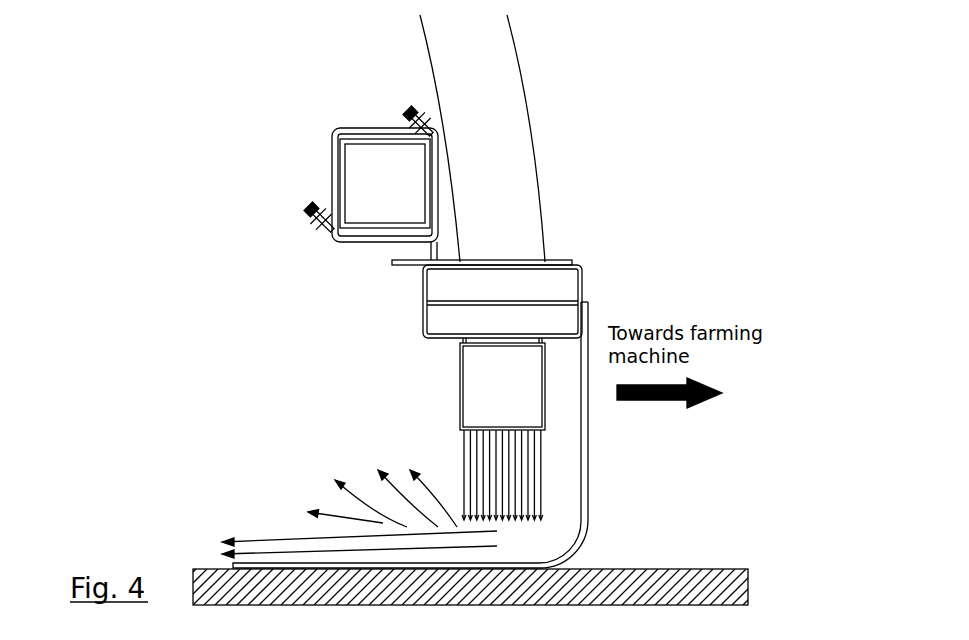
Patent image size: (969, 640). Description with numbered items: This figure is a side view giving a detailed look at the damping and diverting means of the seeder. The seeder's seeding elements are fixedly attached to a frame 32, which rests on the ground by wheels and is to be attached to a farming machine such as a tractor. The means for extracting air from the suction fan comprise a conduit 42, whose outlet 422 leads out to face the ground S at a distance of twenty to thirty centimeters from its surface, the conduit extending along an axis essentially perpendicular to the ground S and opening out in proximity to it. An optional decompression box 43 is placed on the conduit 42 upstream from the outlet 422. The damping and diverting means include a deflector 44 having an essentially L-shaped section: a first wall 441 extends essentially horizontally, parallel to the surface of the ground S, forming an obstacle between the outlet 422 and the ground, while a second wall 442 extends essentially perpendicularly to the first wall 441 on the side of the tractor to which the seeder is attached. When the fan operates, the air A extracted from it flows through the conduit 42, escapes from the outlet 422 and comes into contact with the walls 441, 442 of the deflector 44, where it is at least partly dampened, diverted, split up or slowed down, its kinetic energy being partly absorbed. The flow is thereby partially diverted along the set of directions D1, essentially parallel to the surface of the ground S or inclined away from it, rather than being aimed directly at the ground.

The conduit 42 is at (492, 115).
The frame 32 is at (340, 183).
The decompression box 43 is at (560, 290).
The outlet 422 is at (480, 360).
The first wall 441 is at (260, 563).
The second wall 442 is at (588, 467).
The deflector 44 is at (583, 543).
The ground S is at (727, 587).
The air A is at (463, 440).
The set of directions D1 is at (390, 492).